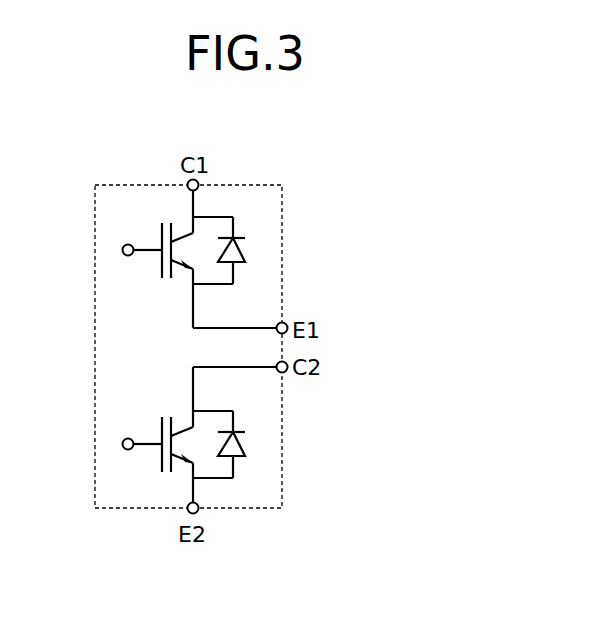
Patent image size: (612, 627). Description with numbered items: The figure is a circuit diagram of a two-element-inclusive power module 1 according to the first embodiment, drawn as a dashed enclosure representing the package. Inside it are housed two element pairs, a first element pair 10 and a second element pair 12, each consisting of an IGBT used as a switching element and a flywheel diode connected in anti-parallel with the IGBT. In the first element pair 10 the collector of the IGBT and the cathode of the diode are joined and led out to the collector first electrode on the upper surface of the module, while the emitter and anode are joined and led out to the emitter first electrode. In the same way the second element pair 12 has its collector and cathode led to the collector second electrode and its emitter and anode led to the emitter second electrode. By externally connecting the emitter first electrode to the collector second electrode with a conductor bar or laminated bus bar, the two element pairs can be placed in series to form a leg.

The two-element-inclusive power module 1 is at (267, 185).
The first element pair 10 is at (262, 243).
The second element pair 12 is at (262, 438).